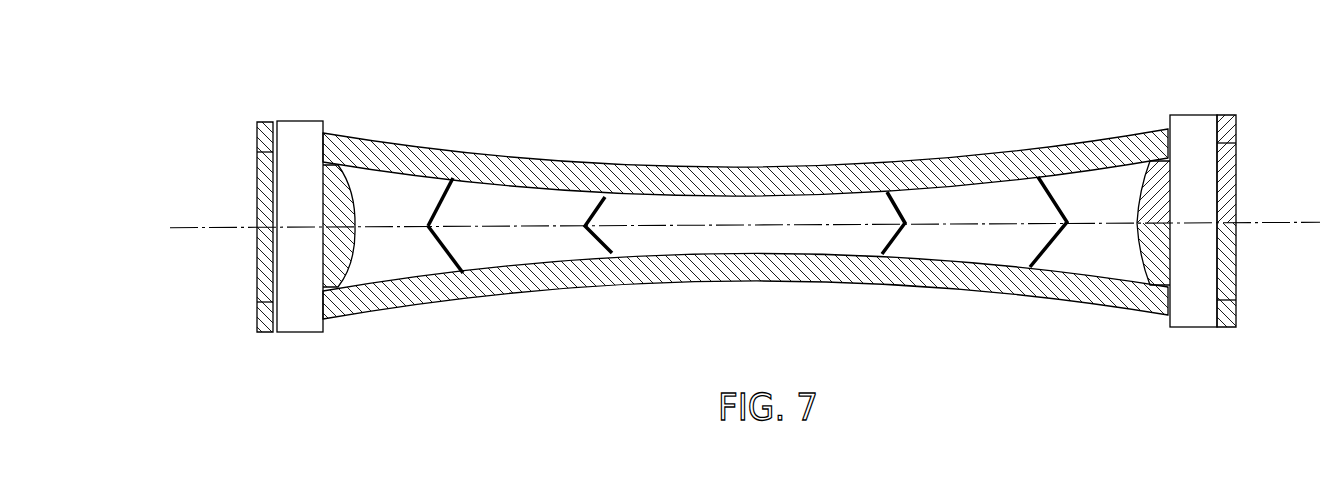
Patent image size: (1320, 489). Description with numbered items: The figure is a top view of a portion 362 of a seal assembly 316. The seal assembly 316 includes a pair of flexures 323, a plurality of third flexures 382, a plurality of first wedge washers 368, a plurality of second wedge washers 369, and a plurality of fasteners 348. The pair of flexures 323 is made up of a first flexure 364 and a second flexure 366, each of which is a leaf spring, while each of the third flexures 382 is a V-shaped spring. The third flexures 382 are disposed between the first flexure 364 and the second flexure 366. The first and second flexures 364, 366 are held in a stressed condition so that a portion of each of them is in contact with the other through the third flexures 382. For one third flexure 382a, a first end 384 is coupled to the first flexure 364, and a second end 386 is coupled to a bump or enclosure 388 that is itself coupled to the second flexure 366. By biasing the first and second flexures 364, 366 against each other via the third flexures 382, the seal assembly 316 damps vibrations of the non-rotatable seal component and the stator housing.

The seal assembly 316 is at (1192, 33).
The pair of flexures 323 is at (989, 256).
The fasteners 348 is at (303, 329).
The portion of seal assembly 362 is at (349, 125).
The first flexure 364 is at (488, 157).
The second flexure 366 is at (418, 307).
The first wedge washers 368 is at (347, 188).
The second wedge washers 369 is at (347, 255).
The third flexures 382 is at (880, 210).
The one third flexure 382a is at (451, 198).
The first end 384 is at (452, 174).
The second end 386 is at (471, 262).
The bump or enclosure 388 is at (496, 296).